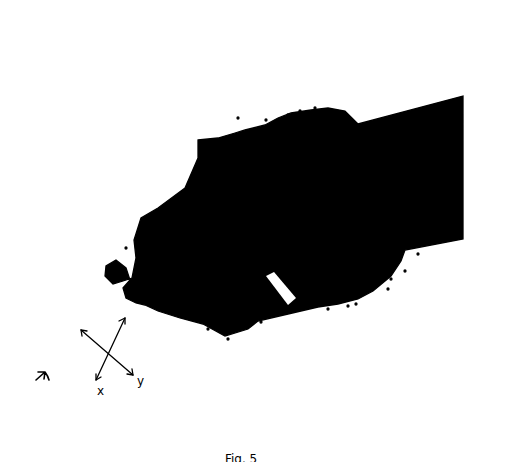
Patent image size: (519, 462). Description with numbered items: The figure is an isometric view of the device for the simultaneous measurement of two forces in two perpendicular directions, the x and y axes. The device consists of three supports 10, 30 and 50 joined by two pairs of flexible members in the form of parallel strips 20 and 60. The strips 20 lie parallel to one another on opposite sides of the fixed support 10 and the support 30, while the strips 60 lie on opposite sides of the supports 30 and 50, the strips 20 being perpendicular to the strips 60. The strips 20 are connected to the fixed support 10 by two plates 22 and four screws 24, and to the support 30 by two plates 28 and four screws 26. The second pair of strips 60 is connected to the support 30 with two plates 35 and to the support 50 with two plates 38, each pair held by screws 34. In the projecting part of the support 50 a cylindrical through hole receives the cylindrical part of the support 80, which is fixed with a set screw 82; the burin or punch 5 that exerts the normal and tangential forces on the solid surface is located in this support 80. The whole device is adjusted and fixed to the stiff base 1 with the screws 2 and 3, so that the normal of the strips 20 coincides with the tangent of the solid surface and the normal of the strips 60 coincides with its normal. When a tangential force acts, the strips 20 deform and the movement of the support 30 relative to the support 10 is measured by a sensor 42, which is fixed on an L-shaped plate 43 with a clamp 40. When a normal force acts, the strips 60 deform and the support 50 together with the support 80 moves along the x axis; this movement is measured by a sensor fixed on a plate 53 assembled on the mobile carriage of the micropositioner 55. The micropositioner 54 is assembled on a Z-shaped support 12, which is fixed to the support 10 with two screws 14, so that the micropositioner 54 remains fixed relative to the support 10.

The stiff base 1 is at (393, 107).
The screw 2 is at (447, 200).
The screw 3 is at (452, 150).
The burin or punch 5 is at (137, 294).
The fixed support 10 is at (292, 103).
The Z-shaped support 12 is at (307, 100).
The screws 14 is at (345, 115).
The parallel strips 20 is at (383, 271).
The plates 22 is at (397, 263).
The screws 24 is at (410, 246).
The screws 26 is at (348, 296).
The plates 28 is at (340, 298).
The support 30 is at (230, 110).
The screws 34 is at (193, 143).
The plates 35 is at (280, 107).
The plates 38 is at (187, 163).
The clamp 40 is at (275, 300).
The sensor 42 is at (290, 300).
The L-shaped plate 43 is at (253, 314).
The support 50 is at (193, 133).
The plate 53 is at (180, 182).
The micropositioner 54 is at (451, 228).
The mobile carriage of the micropositioner 55 is at (177, 308).
The parallel strips 60 is at (258, 112).
The support 80 is at (118, 240).
The set screw 82 is at (200, 321).